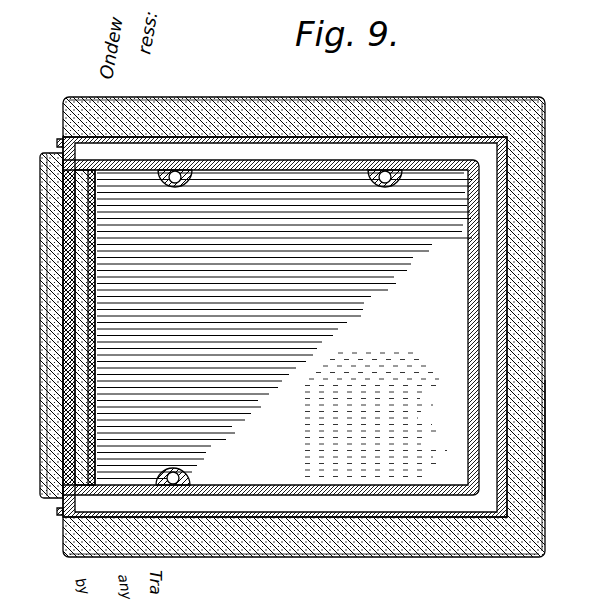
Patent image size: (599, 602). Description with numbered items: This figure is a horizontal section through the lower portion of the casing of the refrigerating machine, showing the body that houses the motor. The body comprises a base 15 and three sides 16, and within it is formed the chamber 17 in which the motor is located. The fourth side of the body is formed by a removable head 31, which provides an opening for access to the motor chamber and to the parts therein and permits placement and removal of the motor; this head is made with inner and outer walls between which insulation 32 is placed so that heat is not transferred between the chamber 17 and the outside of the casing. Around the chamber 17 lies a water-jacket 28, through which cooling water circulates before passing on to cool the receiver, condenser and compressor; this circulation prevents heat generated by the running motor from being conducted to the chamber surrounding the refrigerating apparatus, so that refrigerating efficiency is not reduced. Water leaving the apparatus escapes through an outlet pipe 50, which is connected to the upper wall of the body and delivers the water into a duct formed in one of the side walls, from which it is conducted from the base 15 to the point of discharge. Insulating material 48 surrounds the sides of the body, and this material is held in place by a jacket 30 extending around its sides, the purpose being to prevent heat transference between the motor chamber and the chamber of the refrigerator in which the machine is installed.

The insulating material 48 is at (240, 122).
The water-jacket 28 is at (318, 153).
The sides 16 is at (312, 168).
The outlet pipe 50 is at (392, 185).
The chamber 17 is at (284, 326).
The base 15 is at (376, 415).
The removable head 31 is at (97, 333).
The insulation 32 is at (75, 382).
The jacket 30 is at (545, 448).